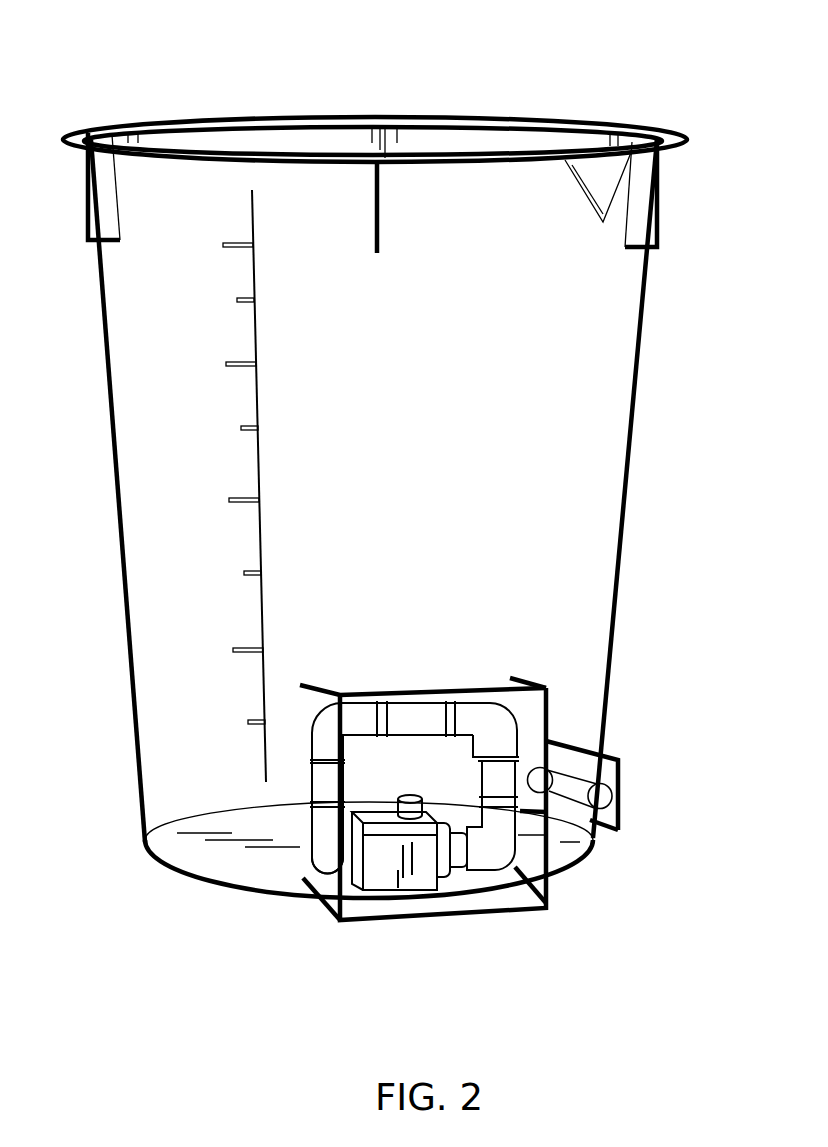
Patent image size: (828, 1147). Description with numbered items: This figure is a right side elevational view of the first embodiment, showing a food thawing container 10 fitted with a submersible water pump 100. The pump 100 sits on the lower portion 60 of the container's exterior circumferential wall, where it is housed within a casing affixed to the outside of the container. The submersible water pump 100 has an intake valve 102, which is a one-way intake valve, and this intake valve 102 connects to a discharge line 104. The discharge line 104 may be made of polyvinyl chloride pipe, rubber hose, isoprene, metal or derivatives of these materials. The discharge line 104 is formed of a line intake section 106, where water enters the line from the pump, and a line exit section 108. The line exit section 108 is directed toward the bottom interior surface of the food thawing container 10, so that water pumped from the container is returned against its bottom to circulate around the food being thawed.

The food thawing container 10 is at (231, 90).
The lower portion 60 is at (132, 846).
The submersible water pump 100 is at (439, 785).
The intake valve 102 is at (415, 877).
The discharge line 104 is at (303, 740).
The line intake section 106 is at (460, 865).
The line exit section 108 is at (308, 862).